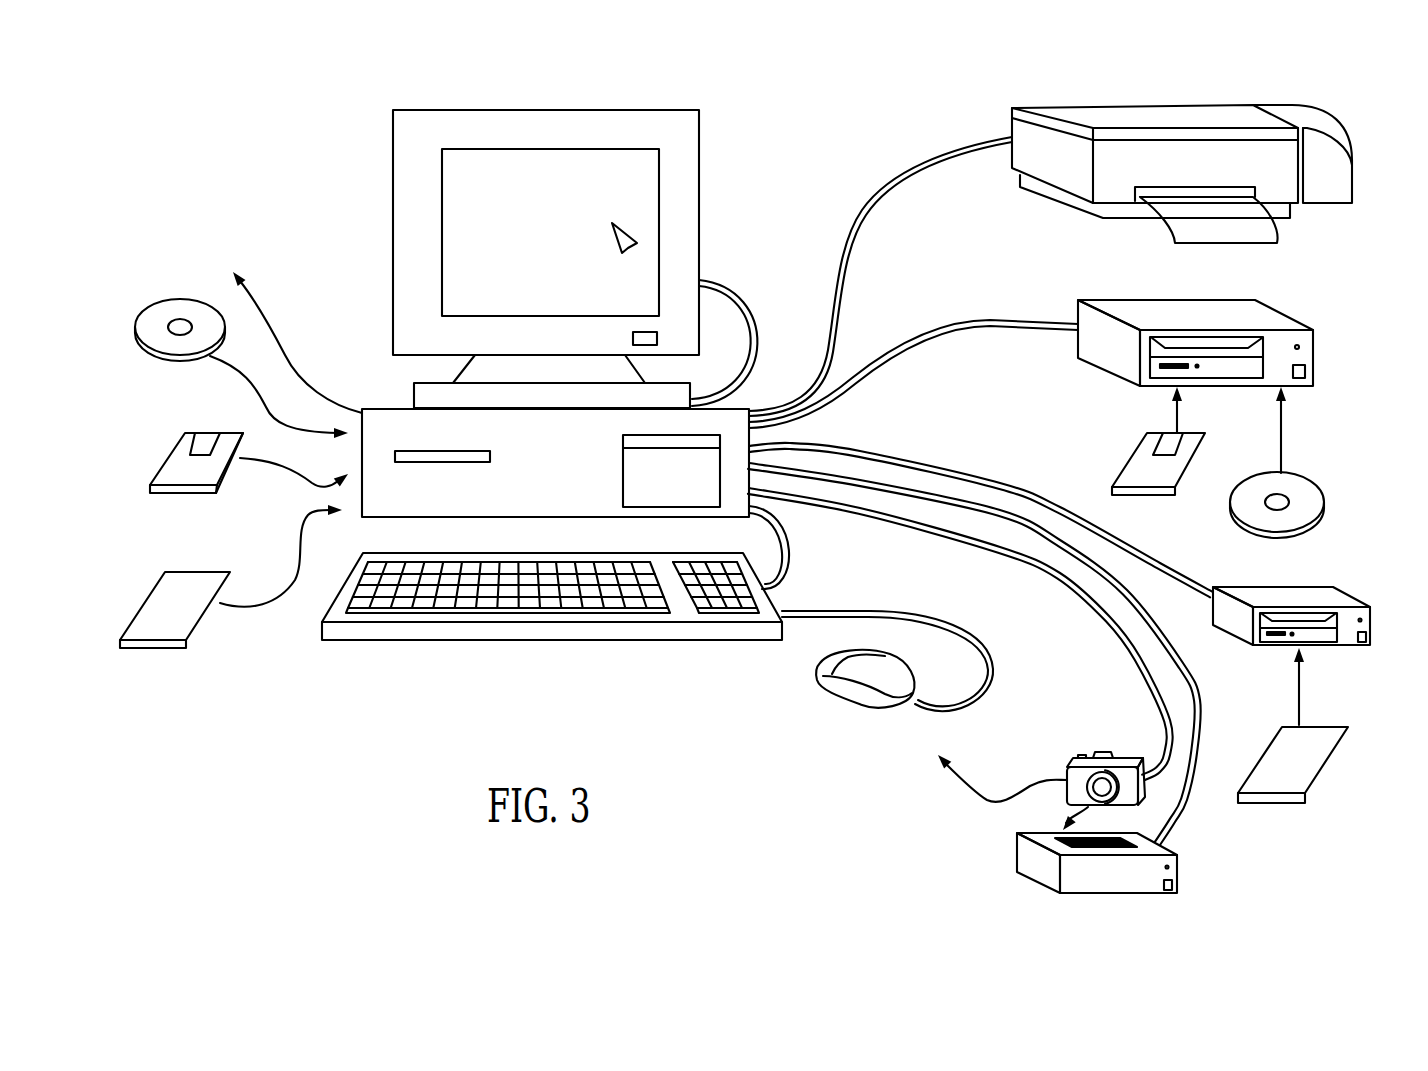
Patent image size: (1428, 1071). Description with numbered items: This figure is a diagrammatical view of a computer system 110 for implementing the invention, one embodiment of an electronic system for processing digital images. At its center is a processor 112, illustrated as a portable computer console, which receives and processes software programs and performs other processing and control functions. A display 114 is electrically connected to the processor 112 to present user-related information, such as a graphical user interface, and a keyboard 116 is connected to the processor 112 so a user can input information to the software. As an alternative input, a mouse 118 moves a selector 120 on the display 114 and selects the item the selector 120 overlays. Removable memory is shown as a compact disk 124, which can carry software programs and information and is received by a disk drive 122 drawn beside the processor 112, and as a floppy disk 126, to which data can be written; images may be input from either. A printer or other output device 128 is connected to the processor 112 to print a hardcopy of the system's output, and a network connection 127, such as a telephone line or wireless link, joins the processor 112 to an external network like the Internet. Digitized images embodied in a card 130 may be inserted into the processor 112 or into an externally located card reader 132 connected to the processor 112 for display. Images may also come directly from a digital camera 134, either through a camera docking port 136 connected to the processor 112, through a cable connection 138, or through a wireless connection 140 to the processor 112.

The computer system 110 is at (266, 114).
The processor 112 is at (393, 408).
The display 114 is at (518, 110).
The keyboard 116 is at (483, 639).
The mouse 118 is at (824, 683).
The selector 120 is at (637, 243).
The compact disk drive 122 is at (1125, 300).
The compact disk-read only memory (CD-ROM) 124 is at (150, 300).
The floppy disk 126 is at (172, 452).
The network connection 127 is at (257, 304).
The printer or other output device 128 is at (1138, 108).
The card 130 is at (153, 588).
The card reader 132 is at (1307, 647).
The digital camera 134 is at (1102, 752).
The camera docking port 136 is at (1037, 872).
The cable connection 138 is at (1117, 633).
The wireless connection 140 is at (985, 798).